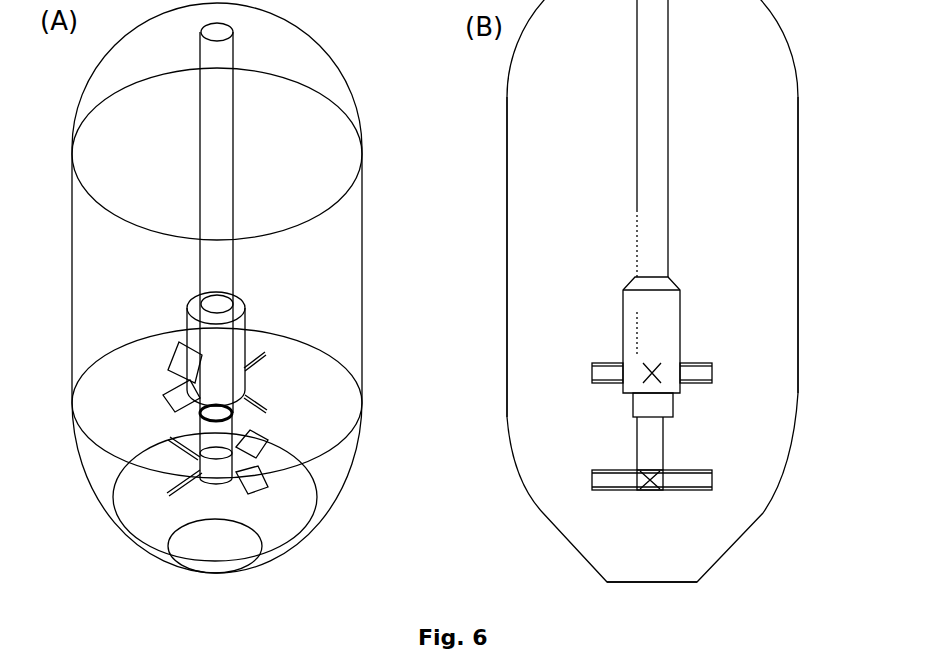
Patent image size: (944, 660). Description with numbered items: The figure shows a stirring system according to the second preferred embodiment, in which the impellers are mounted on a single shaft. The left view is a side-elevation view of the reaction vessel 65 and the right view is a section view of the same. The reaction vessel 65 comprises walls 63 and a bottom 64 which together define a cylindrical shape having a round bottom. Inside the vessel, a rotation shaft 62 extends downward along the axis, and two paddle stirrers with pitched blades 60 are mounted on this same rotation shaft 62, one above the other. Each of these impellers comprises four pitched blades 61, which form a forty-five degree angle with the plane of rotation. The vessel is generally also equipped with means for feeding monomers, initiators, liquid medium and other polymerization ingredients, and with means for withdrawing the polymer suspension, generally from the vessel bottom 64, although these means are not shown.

The paddle stirrer with pitched blades 60 is at (463, 380).
The pitched blade 61 is at (418, 419).
The rotation shaft 62 is at (452, 226).
The walls 63 is at (667, 257).
The bottom 64 is at (432, 570).
The reaction vessel 65 is at (318, 16).